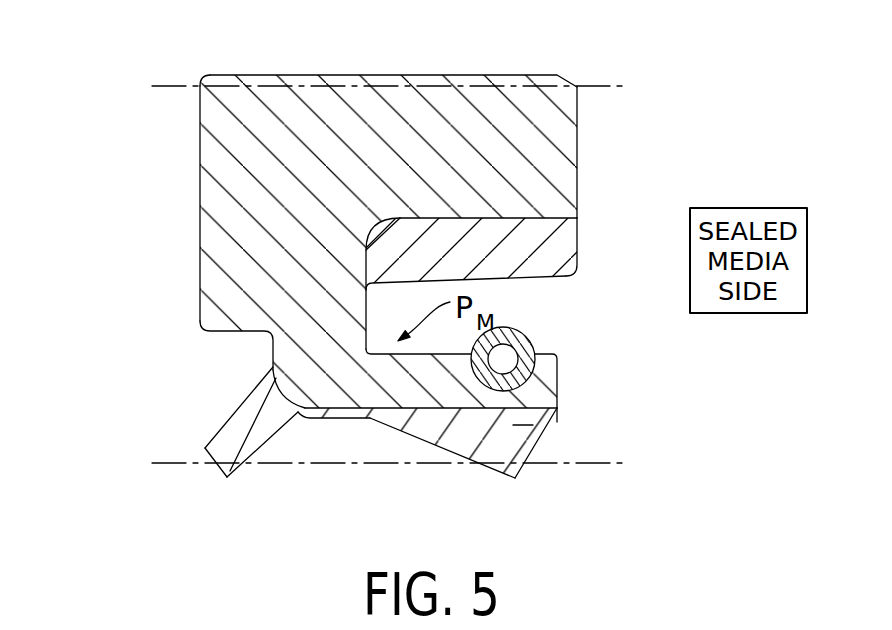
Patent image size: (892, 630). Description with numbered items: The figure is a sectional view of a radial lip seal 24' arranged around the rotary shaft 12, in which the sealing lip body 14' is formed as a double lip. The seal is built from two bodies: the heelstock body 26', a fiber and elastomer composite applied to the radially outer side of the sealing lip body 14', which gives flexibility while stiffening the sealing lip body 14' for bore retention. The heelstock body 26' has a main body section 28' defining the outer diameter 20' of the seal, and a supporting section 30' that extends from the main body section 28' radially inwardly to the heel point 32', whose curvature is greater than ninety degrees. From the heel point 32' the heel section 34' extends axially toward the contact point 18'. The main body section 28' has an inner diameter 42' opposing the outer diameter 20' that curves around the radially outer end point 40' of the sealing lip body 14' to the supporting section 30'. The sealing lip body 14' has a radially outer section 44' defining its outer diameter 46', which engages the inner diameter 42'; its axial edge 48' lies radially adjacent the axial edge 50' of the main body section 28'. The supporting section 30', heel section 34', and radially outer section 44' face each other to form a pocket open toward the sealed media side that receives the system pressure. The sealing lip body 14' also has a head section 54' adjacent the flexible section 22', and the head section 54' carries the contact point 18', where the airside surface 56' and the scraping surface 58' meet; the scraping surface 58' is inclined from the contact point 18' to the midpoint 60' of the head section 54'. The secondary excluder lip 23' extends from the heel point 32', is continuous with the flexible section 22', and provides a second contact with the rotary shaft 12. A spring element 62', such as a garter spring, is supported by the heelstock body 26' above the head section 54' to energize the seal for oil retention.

The radial lip seal 24' is at (345, 43).
The outer diameter 20' is at (388, 220).
The main body section 28' is at (167, 111).
The heelstock body 26' is at (131, 203).
The axial edge 50' is at (621, 152).
The supporting section 30' is at (181, 331).
The radially outer end point 40' is at (264, 278).
The radially outer section 44' is at (500, 265).
The inner diameter 42' is at (534, 189).
The axial edge 48' is at (610, 241).
The outer diameter 46' is at (466, 273).
The head section 54' is at (508, 379).
The midpoint 60' is at (485, 443).
The scraping surface 58' is at (592, 466).
The contact point 18' is at (537, 477).
The flexible section 22' is at (442, 467).
The sealing lip body 14' is at (331, 472).
The airside surface 56' is at (501, 498).
The heel section 34' is at (339, 469).
The heel point 32' is at (229, 422).
The secondary excluder lip 23' is at (219, 520).
The spring element 62' is at (585, 358).
The rotary shaft 12 is at (173, 464).